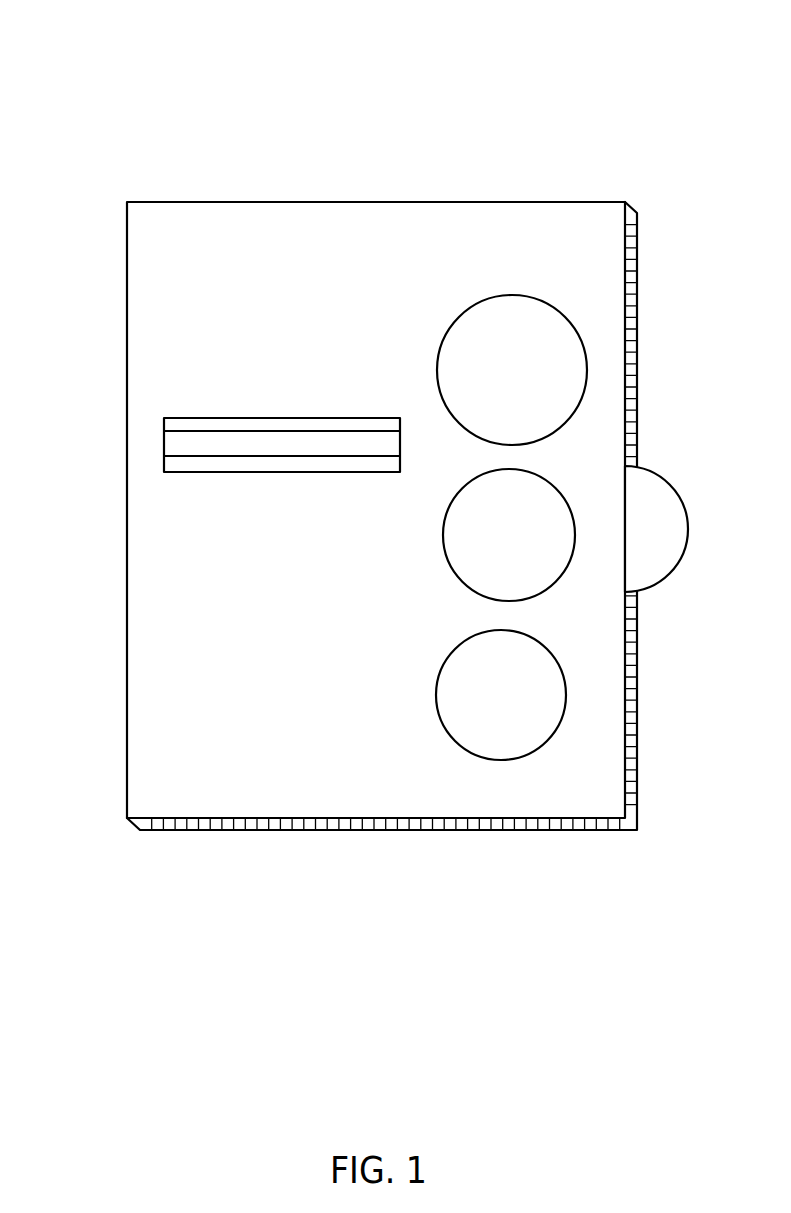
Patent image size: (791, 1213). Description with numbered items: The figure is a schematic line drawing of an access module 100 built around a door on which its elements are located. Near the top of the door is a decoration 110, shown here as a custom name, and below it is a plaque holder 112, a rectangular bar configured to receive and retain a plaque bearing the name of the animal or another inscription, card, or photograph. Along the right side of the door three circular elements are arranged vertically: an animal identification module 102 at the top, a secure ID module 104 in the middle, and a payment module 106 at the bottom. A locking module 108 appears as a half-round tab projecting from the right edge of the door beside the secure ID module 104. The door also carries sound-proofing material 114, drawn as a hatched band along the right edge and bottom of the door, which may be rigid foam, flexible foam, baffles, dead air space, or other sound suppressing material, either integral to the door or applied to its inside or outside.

The access module 100 is at (389, 458).
The animal identification module 102 is at (554, 395).
The secure ID module 104 is at (463, 533).
The payment module 106 is at (552, 712).
The locking module 108 is at (670, 535).
The decoration 110 is at (222, 285).
The plaque holder 112 is at (233, 471).
The sound-proofing material 114 is at (585, 825).